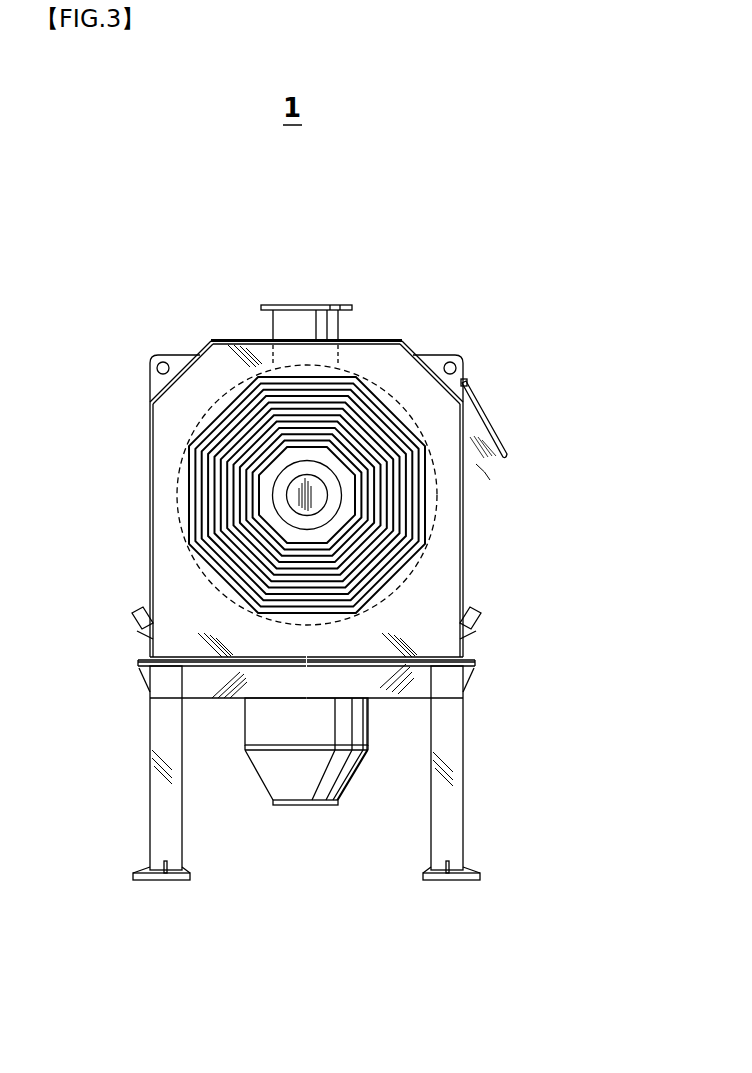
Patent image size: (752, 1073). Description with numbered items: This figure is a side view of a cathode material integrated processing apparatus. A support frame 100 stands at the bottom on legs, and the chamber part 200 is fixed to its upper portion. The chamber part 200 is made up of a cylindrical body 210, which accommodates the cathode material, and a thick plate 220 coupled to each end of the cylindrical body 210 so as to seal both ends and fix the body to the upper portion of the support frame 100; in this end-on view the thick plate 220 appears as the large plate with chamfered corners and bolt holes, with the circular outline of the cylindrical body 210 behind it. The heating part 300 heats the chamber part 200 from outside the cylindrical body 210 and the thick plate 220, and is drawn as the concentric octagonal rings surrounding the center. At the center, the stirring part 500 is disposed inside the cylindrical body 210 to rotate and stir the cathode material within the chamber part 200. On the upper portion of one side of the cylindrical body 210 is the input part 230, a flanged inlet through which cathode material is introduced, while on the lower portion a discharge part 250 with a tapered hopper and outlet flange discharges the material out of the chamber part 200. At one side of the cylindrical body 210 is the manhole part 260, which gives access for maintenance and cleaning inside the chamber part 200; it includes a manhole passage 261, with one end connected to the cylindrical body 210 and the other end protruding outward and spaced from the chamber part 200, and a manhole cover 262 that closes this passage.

The support frame 100 is at (478, 778).
The chamber part 200 is at (480, 241).
The cylindrical body 210 is at (396, 398).
The thick plate 220 is at (375, 349).
The input part 230 is at (305, 305).
The discharge part 250 is at (303, 793).
The manhole part 260 is at (493, 399).
The manhole passage 261 is at (462, 473).
The manhole cover 262 is at (497, 432).
The heating part 300 is at (223, 430).
The stirring part 500 is at (300, 495).